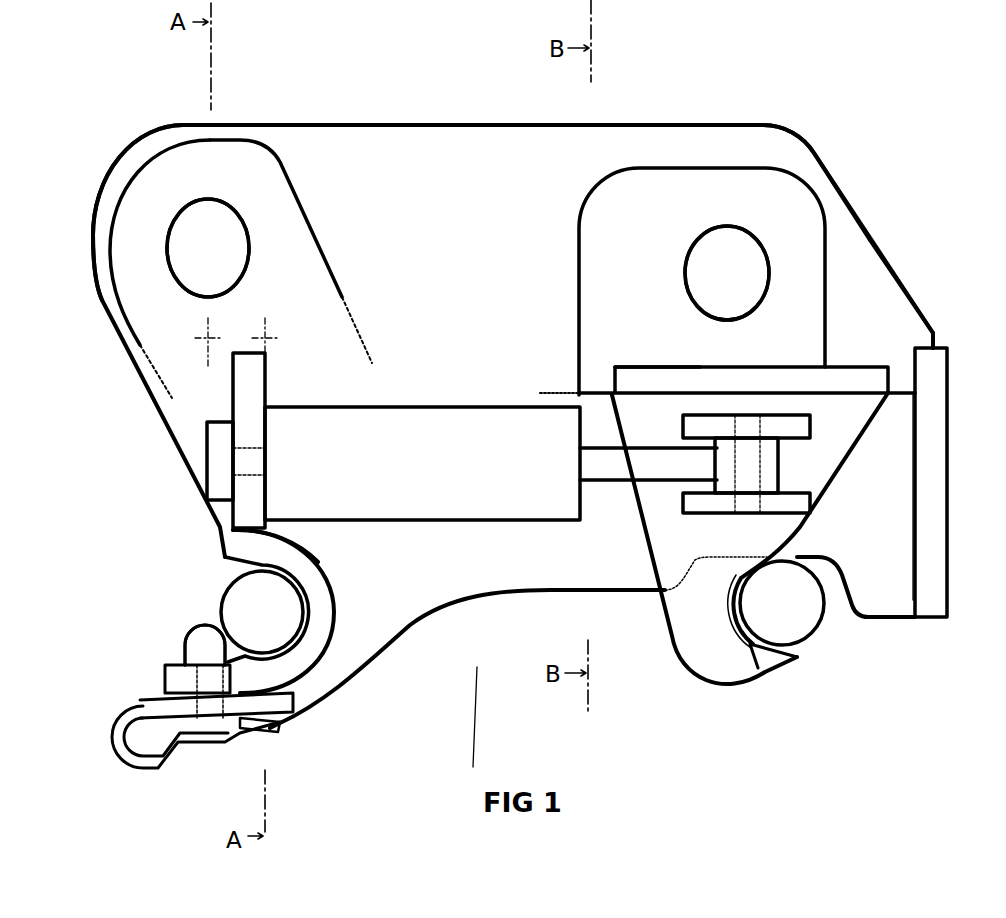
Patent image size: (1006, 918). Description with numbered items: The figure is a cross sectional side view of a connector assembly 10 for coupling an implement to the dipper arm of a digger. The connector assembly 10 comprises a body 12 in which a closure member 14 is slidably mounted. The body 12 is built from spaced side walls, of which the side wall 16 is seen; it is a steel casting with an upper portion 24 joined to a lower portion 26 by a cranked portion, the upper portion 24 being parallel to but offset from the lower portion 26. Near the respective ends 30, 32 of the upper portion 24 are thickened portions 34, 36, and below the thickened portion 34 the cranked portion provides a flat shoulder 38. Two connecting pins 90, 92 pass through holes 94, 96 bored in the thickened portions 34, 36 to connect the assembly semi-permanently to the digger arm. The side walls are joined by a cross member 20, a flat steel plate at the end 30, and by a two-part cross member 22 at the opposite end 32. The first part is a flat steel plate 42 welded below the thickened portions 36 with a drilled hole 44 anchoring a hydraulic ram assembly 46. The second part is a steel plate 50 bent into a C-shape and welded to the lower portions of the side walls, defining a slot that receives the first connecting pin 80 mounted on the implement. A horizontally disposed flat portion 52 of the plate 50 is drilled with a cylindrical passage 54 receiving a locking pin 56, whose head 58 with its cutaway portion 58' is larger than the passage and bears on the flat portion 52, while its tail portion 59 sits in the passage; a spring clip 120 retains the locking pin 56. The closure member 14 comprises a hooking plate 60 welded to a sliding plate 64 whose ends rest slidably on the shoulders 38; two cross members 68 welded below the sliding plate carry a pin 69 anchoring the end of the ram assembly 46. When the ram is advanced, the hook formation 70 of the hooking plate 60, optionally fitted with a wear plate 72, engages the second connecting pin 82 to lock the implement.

The connector assembly 10 is at (462, 724).
The body 12 is at (402, 123).
The closure member 14 is at (845, 363).
The side wall 16 is at (322, 124).
The cross member 20 is at (930, 380).
The cross member 22 is at (300, 545).
The upper portion 24 is at (502, 153).
The lower portion 26 is at (355, 665).
The end 30 is at (823, 152).
The end 32 is at (132, 152).
The thickened portion 34 is at (599, 194).
The thickened portion 36 is at (277, 160).
The shoulder 38 is at (900, 397).
The flat steel plate 42 is at (242, 397).
The hole 44 is at (248, 448).
The hydraulic ram assembly 46 is at (445, 435).
The steel plate 50 is at (333, 600).
The flat portion 52 is at (167, 667).
The cylindrical passage 54 is at (163, 683).
The locking pin 56 is at (200, 707).
The head 58 is at (166, 598).
The cutaway portion 58' is at (155, 615).
The tail portion 59 is at (267, 730).
The hooking plate 60 is at (677, 603).
The sliding plate 64 is at (652, 373).
The cross members 68 is at (793, 428).
The pin 69 is at (758, 425).
The hook formation 70 is at (730, 617).
The wear plate 72 is at (760, 663).
The connecting pin 80 is at (243, 597).
The connecting pin 82 is at (800, 618).
The connecting pin 90 is at (743, 270).
The connecting pin 92 is at (222, 225).
The hole 94 is at (683, 272).
The hole 96 is at (252, 253).
The spring clip 120 is at (147, 767).